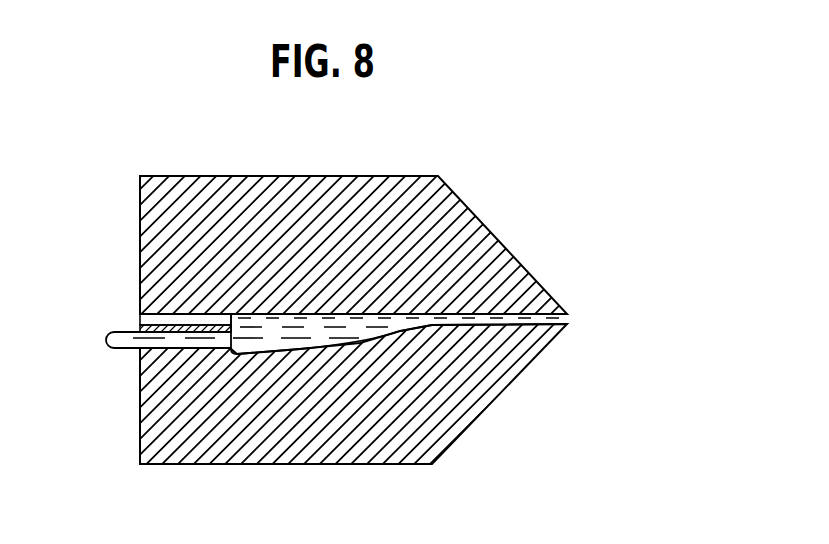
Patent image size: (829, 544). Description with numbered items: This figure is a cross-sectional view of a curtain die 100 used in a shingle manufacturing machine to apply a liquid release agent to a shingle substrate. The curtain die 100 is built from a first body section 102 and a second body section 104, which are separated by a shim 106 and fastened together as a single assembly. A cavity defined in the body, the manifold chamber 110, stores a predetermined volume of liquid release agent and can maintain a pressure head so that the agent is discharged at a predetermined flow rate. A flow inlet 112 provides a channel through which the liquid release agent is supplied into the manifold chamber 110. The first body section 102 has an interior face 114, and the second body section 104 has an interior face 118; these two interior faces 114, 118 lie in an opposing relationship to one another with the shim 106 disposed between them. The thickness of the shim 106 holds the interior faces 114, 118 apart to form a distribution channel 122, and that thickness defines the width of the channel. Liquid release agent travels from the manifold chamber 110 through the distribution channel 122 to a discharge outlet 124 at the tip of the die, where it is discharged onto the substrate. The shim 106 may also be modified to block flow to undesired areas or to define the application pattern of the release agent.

The curtain die 100 is at (438, 112).
The first body section 102 is at (460, 228).
The second body section 104 is at (328, 443).
The shim 106 is at (163, 314).
The manifold chamber 110 is at (375, 337).
The flow inlet 112 is at (228, 346).
The interior face 114 is at (460, 314).
The interior face 118 is at (487, 324).
The distribution channel 122 is at (543, 314).
The discharge outlet 124 is at (570, 320).